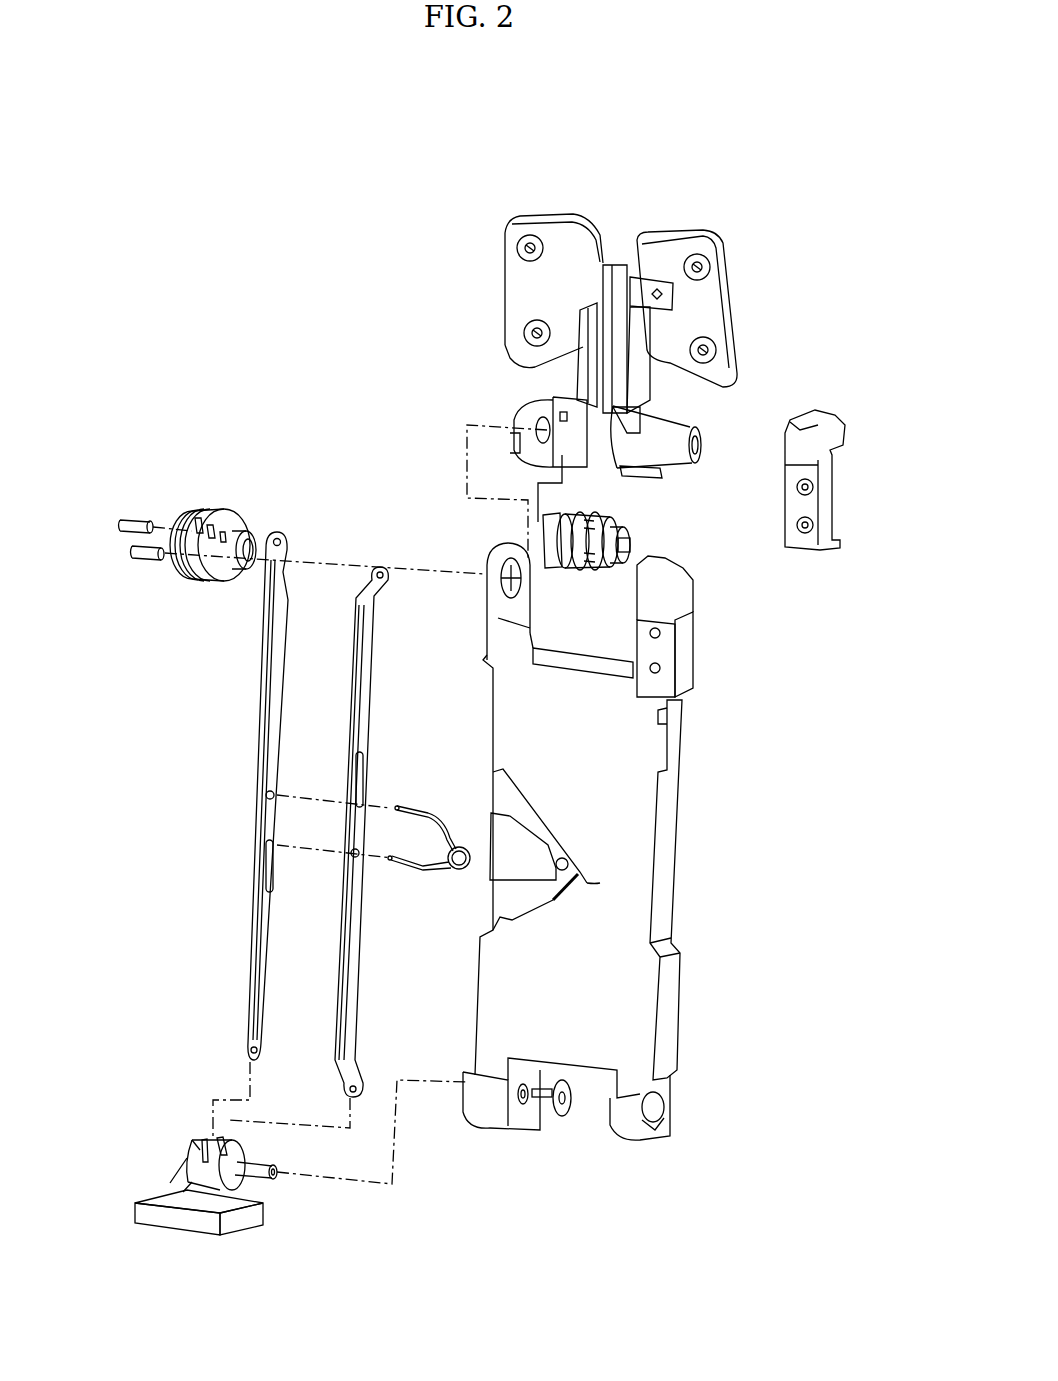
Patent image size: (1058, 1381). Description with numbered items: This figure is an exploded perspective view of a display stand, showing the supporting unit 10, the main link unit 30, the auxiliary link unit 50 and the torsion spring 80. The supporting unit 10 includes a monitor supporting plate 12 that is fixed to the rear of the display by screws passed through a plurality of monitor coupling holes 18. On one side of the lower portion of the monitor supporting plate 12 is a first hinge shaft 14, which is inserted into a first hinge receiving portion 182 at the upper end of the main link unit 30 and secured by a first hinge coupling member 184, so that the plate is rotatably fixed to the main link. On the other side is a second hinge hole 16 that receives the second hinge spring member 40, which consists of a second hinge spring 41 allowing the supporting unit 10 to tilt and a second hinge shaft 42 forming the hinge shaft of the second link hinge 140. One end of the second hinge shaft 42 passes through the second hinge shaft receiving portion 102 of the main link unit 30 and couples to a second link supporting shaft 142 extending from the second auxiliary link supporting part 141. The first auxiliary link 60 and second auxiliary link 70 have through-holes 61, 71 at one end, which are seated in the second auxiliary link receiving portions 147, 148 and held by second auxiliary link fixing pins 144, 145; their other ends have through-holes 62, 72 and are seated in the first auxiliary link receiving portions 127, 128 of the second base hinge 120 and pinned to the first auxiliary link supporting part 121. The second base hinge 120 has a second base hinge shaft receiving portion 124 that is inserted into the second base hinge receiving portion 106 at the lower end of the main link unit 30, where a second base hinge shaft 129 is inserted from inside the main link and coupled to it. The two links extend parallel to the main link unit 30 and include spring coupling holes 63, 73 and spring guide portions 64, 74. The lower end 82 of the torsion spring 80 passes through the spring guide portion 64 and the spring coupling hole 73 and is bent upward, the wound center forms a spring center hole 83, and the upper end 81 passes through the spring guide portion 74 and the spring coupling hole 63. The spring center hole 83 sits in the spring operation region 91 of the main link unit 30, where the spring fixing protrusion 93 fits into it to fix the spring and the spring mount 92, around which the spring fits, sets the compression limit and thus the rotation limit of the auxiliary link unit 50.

The supporting unit 10 is at (732, 230).
The monitor supporting plate 12 is at (657, 247).
The first hinge shaft 14 is at (672, 430).
The second hinge hole 16 is at (535, 410).
The monitor coupling holes 18 is at (523, 336).
The main link unit 30 is at (600, 813).
The second hinge spring member 40 is at (635, 510).
The second hinge spring 41 is at (572, 575).
The second hinge shaft 42 is at (634, 576).
The auxiliary link unit 50 is at (222, 886).
The first auxiliary link 60 is at (263, 770).
The through-hole 61 is at (288, 538).
The through-hole 62 is at (248, 1053).
The spring coupling hole 63 is at (281, 791).
The spring guide portion 64 is at (272, 862).
The second auxiliary link 70 is at (365, 675).
The through-hole 71 is at (385, 568).
The through-hole 72 is at (347, 1091).
The spring coupling hole 73 is at (361, 858).
The spring guide portion 74 is at (366, 770).
The torsion spring 80 is at (443, 830).
The upper end 81 is at (400, 806).
The lower end 82 is at (390, 857).
The spring center hole 83 is at (463, 842).
The spring operation region 91 is at (497, 775).
The spring mount 92 is at (500, 860).
The spring fixing protrusion 93 is at (600, 883).
The second hinge shaft receiving portion 102 is at (494, 555).
The second base hinge receiving portion 106 is at (490, 1110).
The second base hinge 120 is at (168, 1253).
The first auxiliary link supporting part 121 is at (187, 1150).
The second base hinge shaft receiving portion 124 is at (257, 1175).
The first auxiliary link receiving portion 127 is at (207, 1140).
The first auxiliary link receiving portion 128 is at (205, 1162).
The second base hinge shaft 129 is at (563, 1118).
The second link hinge 140 is at (213, 490).
The second auxiliary link supporting part 141 is at (227, 512).
The second link supporting shaft 142 is at (237, 514).
The second auxiliary link fixing pin 144 is at (133, 520).
The second auxiliary link fixing pin 145 is at (132, 555).
The second auxiliary link receiving portion 147 is at (190, 571).
The second auxiliary link receiving portion 148 is at (206, 588).
The first hinge receiving portion 182 is at (651, 566).
The first hinge coupling member 184 is at (838, 423).